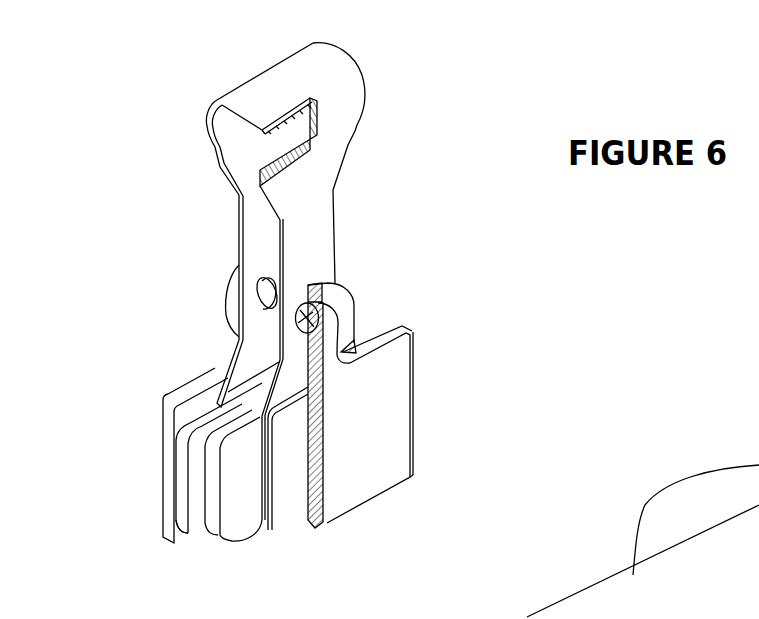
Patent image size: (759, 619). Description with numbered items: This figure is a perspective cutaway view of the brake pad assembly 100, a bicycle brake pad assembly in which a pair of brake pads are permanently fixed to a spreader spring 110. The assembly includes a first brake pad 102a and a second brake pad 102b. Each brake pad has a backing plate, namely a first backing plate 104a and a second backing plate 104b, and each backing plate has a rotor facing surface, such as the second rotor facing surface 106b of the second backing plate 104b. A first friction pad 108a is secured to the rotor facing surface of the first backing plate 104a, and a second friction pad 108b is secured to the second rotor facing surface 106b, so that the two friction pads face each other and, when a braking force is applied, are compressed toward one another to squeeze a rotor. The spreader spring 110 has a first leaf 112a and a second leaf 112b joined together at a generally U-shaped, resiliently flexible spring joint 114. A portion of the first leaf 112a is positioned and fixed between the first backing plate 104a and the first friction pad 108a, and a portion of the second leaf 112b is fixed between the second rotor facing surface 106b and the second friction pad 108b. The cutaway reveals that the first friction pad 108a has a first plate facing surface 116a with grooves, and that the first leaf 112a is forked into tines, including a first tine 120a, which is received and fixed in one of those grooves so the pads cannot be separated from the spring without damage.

The brake pad assembly 100 is at (403, 297).
The first brake pad 102a is at (388, 382).
The second brake pad 102b is at (160, 483).
The first backing plate 104a is at (412, 463).
The second backing plate 104b is at (170, 420).
The second rotor facing surface 106b is at (188, 528).
The first friction pad 108a is at (227, 533).
The second friction pad 108b is at (201, 420).
The spreader spring 110 is at (340, 142).
The first leaf 112a is at (327, 223).
The second leaf 112b is at (257, 240).
The spring joint 114 is at (335, 47).
The first plate facing surface 116a is at (290, 502).
The first tine 120a is at (287, 498).